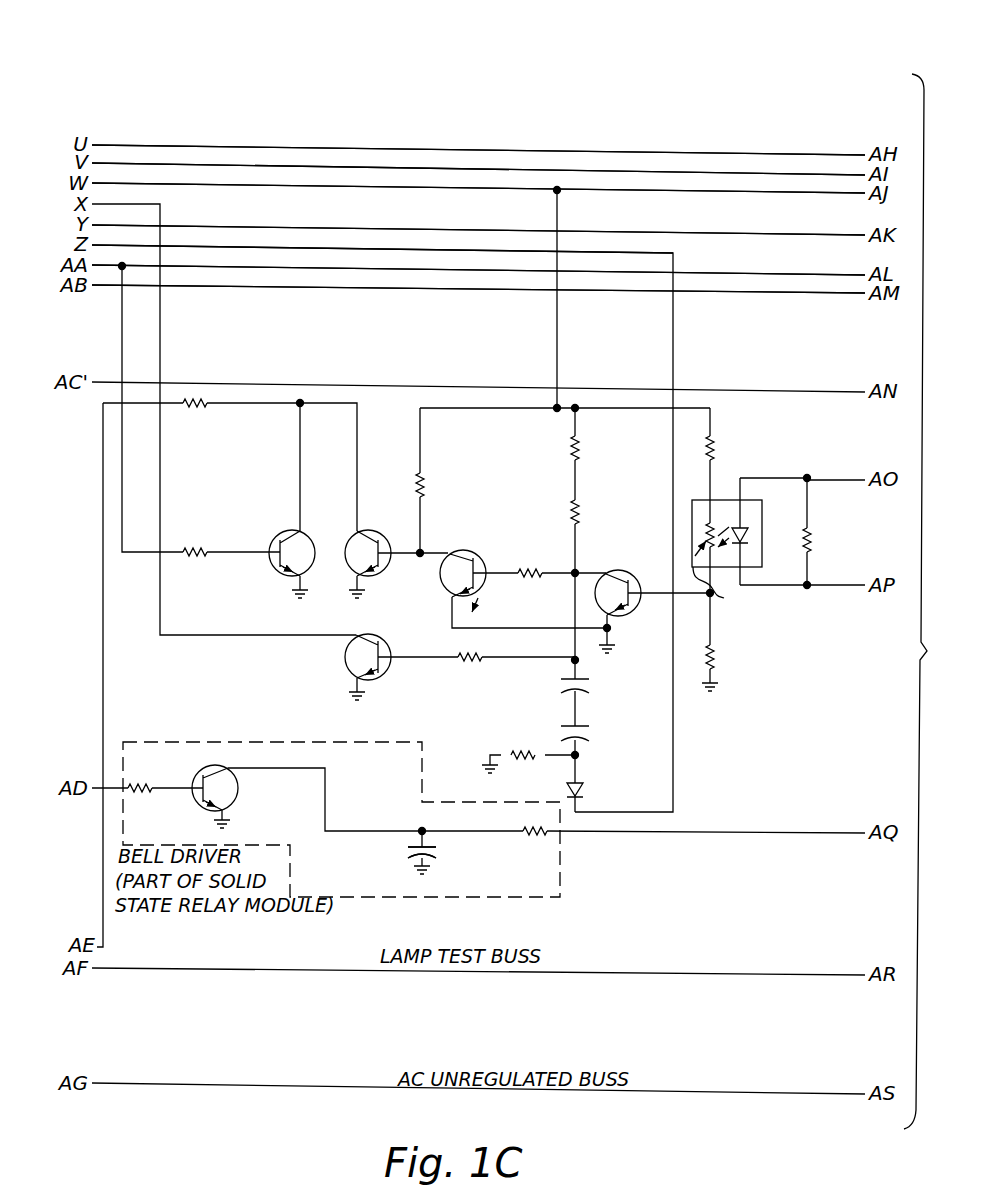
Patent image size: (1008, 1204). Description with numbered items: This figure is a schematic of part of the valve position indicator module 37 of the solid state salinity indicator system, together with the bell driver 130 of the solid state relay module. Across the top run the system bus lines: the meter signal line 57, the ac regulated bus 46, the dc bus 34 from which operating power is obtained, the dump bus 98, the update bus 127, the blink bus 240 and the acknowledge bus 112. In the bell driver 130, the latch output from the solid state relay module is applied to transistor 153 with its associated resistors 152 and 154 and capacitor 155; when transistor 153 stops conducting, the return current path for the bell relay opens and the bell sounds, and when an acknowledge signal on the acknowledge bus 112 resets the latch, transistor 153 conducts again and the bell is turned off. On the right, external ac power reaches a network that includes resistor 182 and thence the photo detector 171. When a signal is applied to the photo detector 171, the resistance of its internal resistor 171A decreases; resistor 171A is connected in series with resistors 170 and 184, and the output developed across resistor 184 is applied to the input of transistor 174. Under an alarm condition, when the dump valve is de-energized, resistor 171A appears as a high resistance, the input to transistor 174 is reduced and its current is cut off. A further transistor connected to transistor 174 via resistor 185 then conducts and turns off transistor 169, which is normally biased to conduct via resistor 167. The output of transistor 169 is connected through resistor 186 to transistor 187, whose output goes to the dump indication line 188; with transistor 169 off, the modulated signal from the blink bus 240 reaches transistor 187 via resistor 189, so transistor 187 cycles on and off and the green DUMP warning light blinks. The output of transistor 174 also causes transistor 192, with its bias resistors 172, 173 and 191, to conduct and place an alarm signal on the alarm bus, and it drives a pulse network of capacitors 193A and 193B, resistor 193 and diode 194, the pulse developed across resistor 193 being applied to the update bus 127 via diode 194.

The valve position indicator module 37 is at (514, 43).
The meter signal line 57 is at (440, 148).
The AC regulated buss 46 is at (470, 166).
The dc bus 34 is at (395, 186).
The dump buss I 98 is at (421, 230).
The update bus 127 is at (428, 248).
The blink bus 240 is at (420, 270).
The acknowledge bus 112 is at (503, 291).
The dump indication line 188 is at (106, 603).
The resistor 186 is at (196, 410).
The resistor 189 is at (202, 546).
The transistor 187 is at (301, 530).
The transistor 169 is at (388, 512).
The resistor 167 is at (430, 483).
The transistor 192 is at (390, 642).
The bias resistor 191 is at (470, 668).
The resistor 185 is at (531, 568).
The bias resistor 172 is at (588, 450).
The bias resistor 173 is at (585, 513).
The transistor 174 is at (633, 572).
The capacitor 193A is at (593, 686).
The capacitor 193B is at (593, 732).
The resistor 193 is at (524, 742).
The diode 194 is at (587, 790).
The resistor 170 is at (700, 450).
The photo detector 171 is at (762, 510).
The resistor 182 is at (803, 552).
The photo detector resistor 171A is at (741, 601).
The resistor 184 is at (721, 657).
The bell driver 130 is at (138, 727).
The resistor 152 is at (143, 800).
The transistor 153 is at (237, 806).
The capacitor 155 is at (405, 852).
The resistor 154 is at (535, 842).